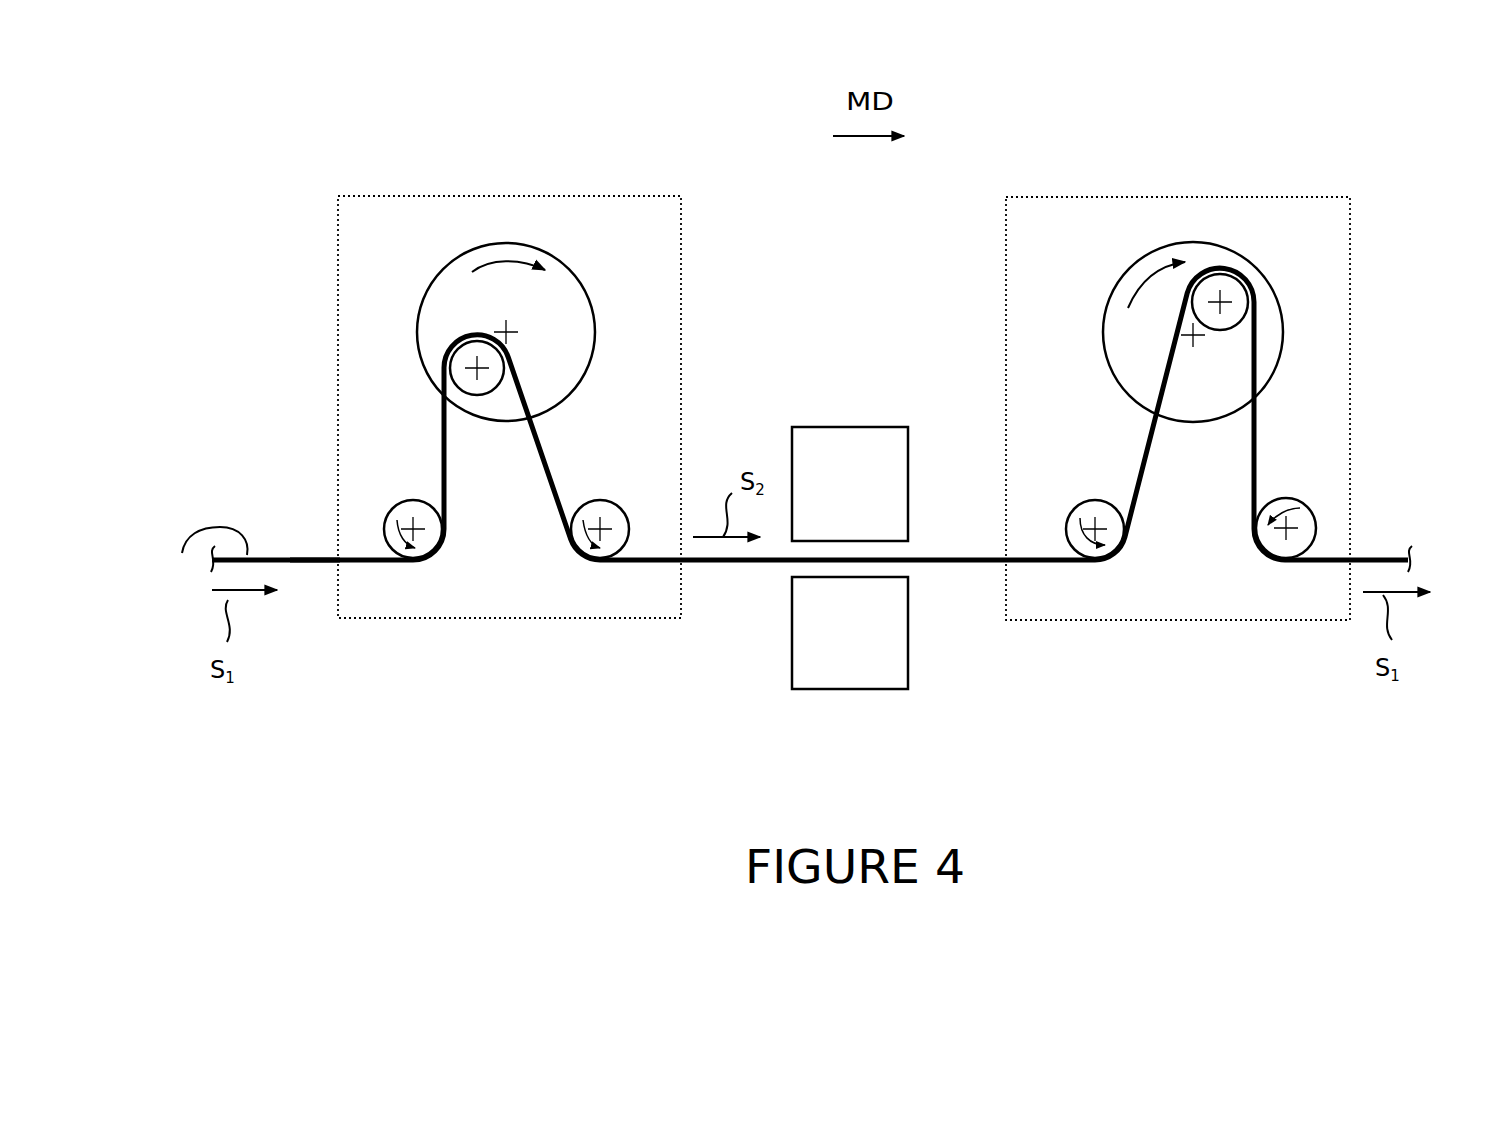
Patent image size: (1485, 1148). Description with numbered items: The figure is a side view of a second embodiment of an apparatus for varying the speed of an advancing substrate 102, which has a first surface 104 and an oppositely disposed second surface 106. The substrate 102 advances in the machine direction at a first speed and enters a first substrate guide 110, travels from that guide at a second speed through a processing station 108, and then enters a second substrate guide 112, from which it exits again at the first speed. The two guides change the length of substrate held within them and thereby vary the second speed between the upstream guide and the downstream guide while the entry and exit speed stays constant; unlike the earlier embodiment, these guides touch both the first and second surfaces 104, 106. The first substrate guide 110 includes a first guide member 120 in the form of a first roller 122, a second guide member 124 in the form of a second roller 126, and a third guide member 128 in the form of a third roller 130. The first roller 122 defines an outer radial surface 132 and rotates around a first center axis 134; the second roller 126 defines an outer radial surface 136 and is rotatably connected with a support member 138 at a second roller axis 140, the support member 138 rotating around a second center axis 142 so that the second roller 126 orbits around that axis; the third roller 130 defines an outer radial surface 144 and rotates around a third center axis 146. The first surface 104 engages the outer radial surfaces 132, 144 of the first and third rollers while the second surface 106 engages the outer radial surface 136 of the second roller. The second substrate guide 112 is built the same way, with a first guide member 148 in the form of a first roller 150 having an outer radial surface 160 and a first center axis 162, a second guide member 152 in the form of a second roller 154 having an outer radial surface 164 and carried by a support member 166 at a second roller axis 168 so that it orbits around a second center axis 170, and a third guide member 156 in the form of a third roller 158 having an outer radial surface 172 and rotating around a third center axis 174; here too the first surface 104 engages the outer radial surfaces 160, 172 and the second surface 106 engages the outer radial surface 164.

The substrate 102 is at (297, 562).
The first surface 104 is at (193, 557).
The second surface 106 is at (317, 562).
The processing station 108 is at (838, 455).
The first substrate guide 110 is at (575, 220).
The second substrate guide 112 is at (1110, 222).
The first guide member 120 is at (285, 473).
The first roller 122 is at (285, 473).
The second guide member 124 is at (490, 533).
The second roller 126 is at (490, 533).
The third guide member 128 is at (701, 404).
The third roller 130 is at (701, 404).
The outer radial surface 132 is at (291, 501).
The first center axis 134 is at (403, 503).
The outer radial surface 136 is at (450, 533).
The support member 138 is at (545, 325).
The second roller axis 140 is at (485, 390).
The second center axis 142 is at (515, 327).
The outer radial surface 144 is at (680, 438).
The third center axis 146 is at (603, 527).
The first guide member 148 is at (1014, 449).
The first roller 150 is at (1014, 449).
The second guide member 152 is at (1170, 439).
The second roller 154 is at (1170, 439).
The third guide member 156 is at (1363, 459).
The third roller 158 is at (1363, 459).
The outer radial surface 160 is at (1021, 504).
The first center axis 162 is at (1088, 527).
The outer radial surface 164 is at (1194, 439).
The support member 166 is at (1120, 323).
The second roller axis 168 is at (1194, 399).
The second center axis 170 is at (1215, 328).
The outer radial surface 172 is at (1343, 459).
The third center axis 174 is at (1295, 525).